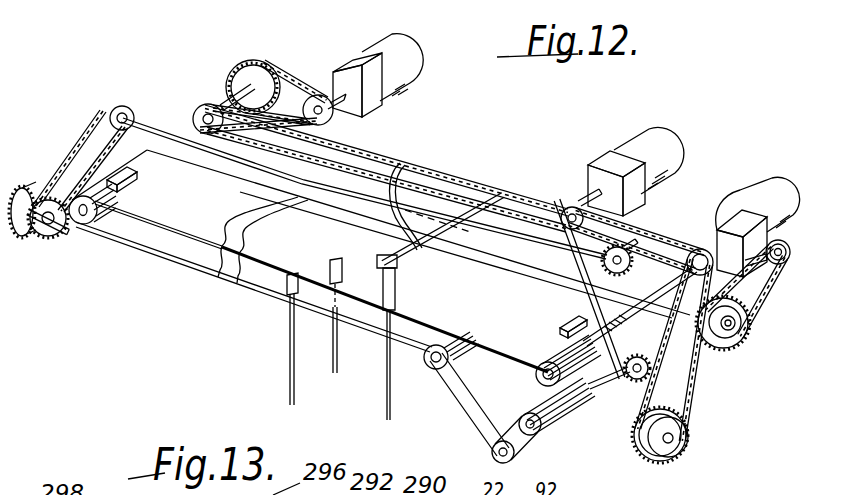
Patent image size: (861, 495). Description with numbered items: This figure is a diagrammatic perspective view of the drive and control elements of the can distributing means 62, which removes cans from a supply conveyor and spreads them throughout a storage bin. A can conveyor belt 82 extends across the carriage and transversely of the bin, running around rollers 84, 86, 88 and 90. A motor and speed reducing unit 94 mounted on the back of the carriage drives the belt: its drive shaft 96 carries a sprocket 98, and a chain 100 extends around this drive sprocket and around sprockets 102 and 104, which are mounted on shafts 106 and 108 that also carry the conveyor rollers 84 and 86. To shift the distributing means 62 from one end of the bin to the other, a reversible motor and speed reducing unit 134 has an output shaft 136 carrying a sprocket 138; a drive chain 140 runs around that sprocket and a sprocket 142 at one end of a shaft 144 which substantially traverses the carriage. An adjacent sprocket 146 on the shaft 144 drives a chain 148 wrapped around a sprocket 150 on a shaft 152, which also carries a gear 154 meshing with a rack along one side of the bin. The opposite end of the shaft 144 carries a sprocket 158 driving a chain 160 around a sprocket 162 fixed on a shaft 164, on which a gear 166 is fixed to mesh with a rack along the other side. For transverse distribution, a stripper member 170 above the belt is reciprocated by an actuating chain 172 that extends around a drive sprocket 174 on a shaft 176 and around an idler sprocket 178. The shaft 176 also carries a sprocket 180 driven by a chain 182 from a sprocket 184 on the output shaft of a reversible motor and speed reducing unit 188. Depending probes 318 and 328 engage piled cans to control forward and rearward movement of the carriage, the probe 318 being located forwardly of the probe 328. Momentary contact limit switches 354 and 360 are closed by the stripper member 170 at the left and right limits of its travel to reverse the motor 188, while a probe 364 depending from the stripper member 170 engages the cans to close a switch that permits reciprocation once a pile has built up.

The distributing means 62 is at (200, 279).
The can conveyor belt 82 is at (247, 258).
The conveyor roller 84 is at (536, 373).
The conveyor roller 86 is at (503, 441).
The conveyor roller 88 is at (443, 345).
The conveyor roller 90 is at (100, 223).
The motor and speed reducing unit 94 is at (640, 140).
The drive shaft 96 is at (573, 207).
The drive sprocket 98 is at (561, 212).
The chain 100 is at (636, 226).
The sprocket 102 is at (699, 248).
The sprocket 104 is at (637, 381).
The shaft 106 is at (626, 313).
The shaft 108 is at (603, 405).
The motor and speed reducing unit 134 is at (738, 212).
The output shaft 136 is at (762, 245).
The sprocket 138 is at (777, 265).
The drive chain 140 is at (729, 285).
The sprocket 142 is at (738, 345).
The shaft 144 is at (267, 180).
The sprocket 146 is at (712, 383).
The drive chain 148 is at (700, 405).
The sprocket 150 is at (655, 458).
The shaft 152 is at (673, 437).
The gear 154 is at (680, 462).
The sprocket 158 is at (118, 104).
The chain 160 is at (94, 138).
The sprocket 162 is at (40, 242).
The shaft 164 is at (68, 236).
The gear 166 is at (38, 195).
The stripper member 170 is at (463, 213).
The actuating chain 172 is at (366, 156).
The drive sprocket 174 is at (198, 108).
The drive shaft 176 is at (215, 104).
The idler sprocket 178 is at (631, 261).
The sprocket 180 is at (255, 62).
The chain 182 is at (291, 75).
The sprocket 184 is at (322, 96).
The reversible motor and speed reducing unit 188 is at (402, 90).
The probe 318 is at (290, 338).
The probe 328 is at (335, 380).
The momentary contact limit switch 354 is at (133, 170).
The momentary contact limit switch 360 is at (558, 330).
The probe 364 is at (389, 402).